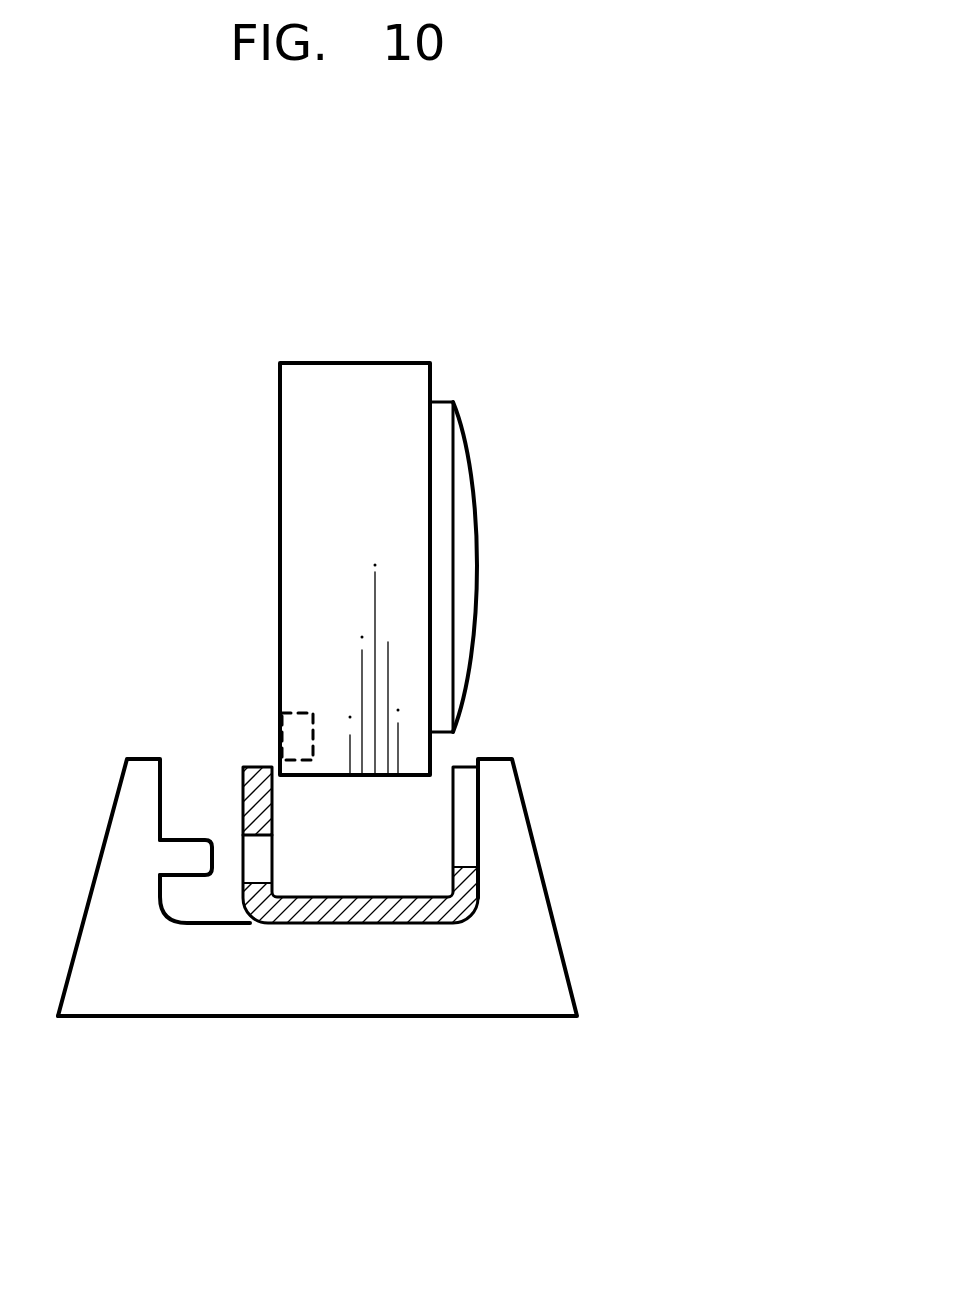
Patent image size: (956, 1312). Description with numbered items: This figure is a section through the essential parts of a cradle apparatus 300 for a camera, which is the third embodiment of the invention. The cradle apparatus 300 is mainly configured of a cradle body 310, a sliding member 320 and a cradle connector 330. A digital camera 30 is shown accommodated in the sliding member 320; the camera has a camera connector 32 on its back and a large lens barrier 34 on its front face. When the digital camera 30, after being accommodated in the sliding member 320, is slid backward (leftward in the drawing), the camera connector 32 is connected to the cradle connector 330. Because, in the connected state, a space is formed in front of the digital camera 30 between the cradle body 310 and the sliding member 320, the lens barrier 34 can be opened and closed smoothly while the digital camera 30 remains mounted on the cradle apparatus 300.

The digital camera 30 is at (372, 363).
The camera connector 32 is at (280, 725).
The lens barrier 34 is at (468, 532).
The cradle apparatus 300 is at (567, 883).
The cradle body 310 is at (278, 993).
The sliding member 320 is at (410, 915).
The cradle connector 330 is at (190, 852).